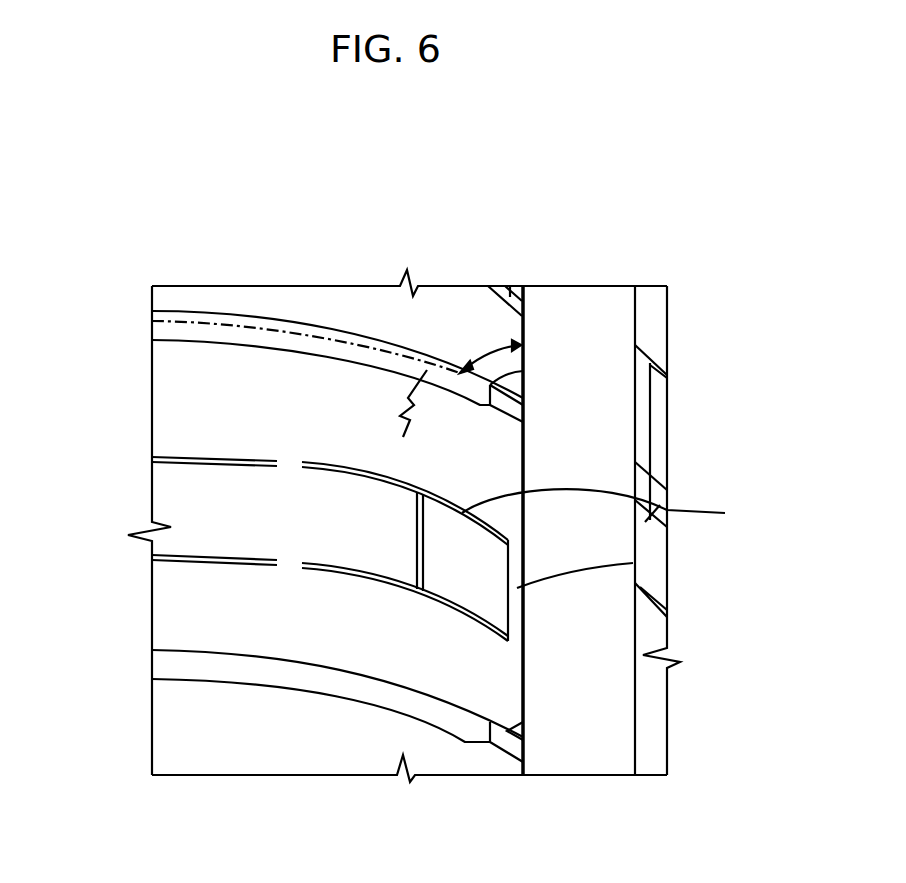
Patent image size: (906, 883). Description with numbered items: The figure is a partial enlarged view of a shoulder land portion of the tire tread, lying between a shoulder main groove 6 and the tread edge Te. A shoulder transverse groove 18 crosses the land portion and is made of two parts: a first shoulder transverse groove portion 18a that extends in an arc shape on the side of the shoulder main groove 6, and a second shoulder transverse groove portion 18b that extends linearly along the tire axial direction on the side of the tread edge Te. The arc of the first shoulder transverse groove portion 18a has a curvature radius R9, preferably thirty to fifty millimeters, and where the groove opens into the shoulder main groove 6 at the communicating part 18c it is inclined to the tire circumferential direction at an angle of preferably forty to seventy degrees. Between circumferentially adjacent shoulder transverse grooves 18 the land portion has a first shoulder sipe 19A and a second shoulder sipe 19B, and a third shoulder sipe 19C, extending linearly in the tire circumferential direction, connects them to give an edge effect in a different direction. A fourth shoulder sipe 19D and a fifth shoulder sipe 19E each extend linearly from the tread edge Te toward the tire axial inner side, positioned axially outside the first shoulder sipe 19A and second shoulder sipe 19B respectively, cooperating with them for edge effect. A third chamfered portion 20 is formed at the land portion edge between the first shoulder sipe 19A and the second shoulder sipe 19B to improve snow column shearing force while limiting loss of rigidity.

The shoulder main groove 6 is at (578, 342).
The shoulder transverse groove 18 is at (358, 203).
The first shoulder transverse groove portion 18a is at (375, 348).
The second shoulder transverse groove portion 18b is at (178, 318).
The communicating part 18c is at (523, 412).
The tread edge Te is at (151, 357).
The fifth shoulder sipe 19E is at (222, 461).
The fourth shoulder sipe 19D is at (222, 563).
The third shoulder sipe 19C is at (410, 540).
The first shoulder sipe 19A is at (440, 612).
The second shoulder sipe 19B is at (623, 508).
The curvature radius R9 is at (523, 455).
The third chamfered portion 20 is at (633, 563).